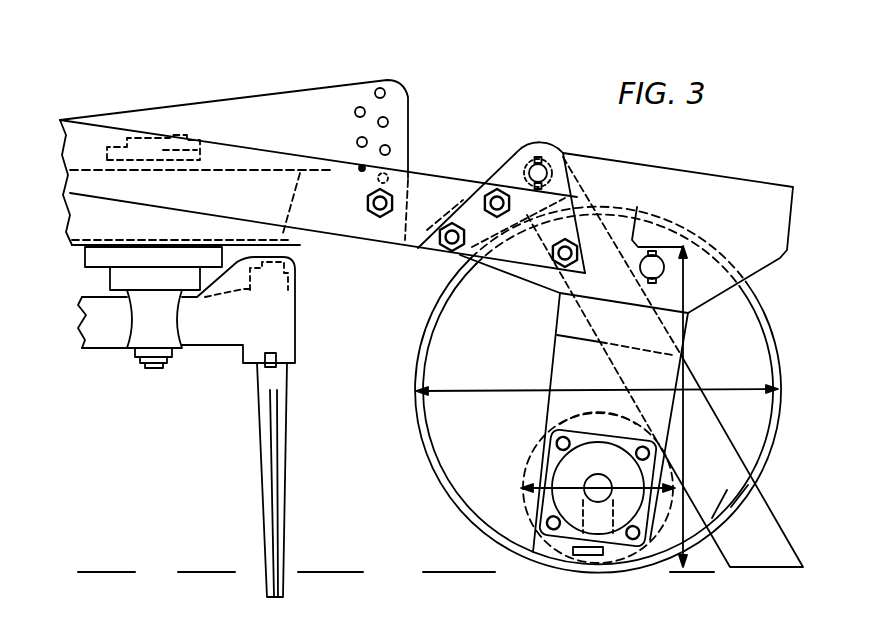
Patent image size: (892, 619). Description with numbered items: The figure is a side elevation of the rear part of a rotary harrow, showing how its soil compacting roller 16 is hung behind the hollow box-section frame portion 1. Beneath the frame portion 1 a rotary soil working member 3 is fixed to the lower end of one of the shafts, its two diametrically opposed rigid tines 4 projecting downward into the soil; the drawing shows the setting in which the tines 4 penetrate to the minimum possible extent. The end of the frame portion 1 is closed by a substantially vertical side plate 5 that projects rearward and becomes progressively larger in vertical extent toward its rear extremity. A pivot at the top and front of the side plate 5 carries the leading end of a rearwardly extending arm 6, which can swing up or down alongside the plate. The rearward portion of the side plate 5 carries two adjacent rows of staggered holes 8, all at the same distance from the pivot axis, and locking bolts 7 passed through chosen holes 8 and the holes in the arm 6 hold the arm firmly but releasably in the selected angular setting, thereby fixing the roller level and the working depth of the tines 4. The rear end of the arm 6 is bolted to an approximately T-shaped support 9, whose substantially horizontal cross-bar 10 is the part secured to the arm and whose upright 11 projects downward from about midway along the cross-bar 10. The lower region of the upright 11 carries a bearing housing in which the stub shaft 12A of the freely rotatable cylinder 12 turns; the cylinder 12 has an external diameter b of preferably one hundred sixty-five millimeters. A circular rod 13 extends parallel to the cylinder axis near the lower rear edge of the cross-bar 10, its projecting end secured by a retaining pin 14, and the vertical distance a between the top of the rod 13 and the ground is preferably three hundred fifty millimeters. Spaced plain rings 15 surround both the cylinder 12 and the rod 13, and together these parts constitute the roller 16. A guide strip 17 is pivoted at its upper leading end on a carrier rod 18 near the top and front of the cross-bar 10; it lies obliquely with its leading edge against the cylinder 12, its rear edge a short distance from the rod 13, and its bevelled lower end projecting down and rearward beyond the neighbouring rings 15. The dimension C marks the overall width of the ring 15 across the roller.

The hollow box-section frame portion 1 is at (250, 150).
The soil working member 3 is at (218, 357).
The tine 4 is at (257, 435).
The side plate 5 is at (317, 93).
The arm 6 is at (433, 183).
The locking bolt 7 is at (366, 210).
The holes 8 is at (377, 124).
The support 9 is at (707, 176).
The cross-bar 10 is at (743, 179).
The upright 11 is at (549, 402).
The cylinder 12 is at (538, 458).
The stub shaft 12A is at (589, 481).
The rod 13 is at (656, 215).
The retaining pin 14 is at (654, 253).
The plain ring 15 is at (417, 363).
The soil compacting roller 16 is at (404, 334).
The strip 17 is at (763, 517).
The carrier rod 18 is at (547, 165).
The vertical distance a is at (688, 325).
The external diameter b is at (633, 488).
The dimension C is at (481, 388).